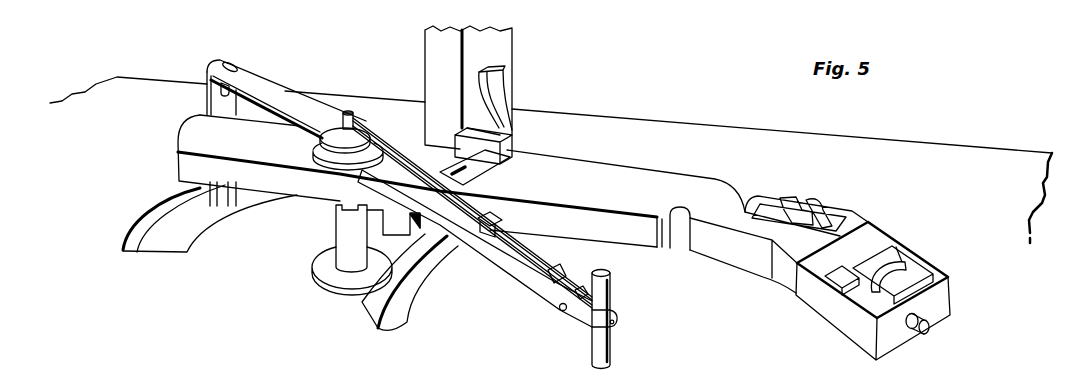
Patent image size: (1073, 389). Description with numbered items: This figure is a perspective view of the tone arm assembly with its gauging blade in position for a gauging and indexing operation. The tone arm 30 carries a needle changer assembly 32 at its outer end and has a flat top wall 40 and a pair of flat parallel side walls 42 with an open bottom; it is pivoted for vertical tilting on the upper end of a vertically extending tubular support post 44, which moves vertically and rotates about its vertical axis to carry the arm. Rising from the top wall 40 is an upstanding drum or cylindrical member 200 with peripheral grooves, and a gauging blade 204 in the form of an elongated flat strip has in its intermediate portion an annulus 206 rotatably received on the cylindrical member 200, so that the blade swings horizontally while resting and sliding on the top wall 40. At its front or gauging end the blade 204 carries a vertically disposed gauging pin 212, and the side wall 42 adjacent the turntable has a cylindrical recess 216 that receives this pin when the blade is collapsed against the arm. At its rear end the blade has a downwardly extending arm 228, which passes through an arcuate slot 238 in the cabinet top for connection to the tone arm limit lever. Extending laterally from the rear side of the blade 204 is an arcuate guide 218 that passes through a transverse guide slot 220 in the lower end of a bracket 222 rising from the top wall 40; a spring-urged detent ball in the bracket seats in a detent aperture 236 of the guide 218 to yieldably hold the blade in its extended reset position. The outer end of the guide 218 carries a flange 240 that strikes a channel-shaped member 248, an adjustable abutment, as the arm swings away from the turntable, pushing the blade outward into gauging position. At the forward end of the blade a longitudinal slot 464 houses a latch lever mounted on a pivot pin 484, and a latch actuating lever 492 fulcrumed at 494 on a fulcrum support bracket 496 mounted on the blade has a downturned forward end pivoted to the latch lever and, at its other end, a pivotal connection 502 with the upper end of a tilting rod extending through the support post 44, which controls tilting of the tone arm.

The tone arm 30 is at (724, 178).
The needle changer assembly 32 is at (926, 236).
The top wall 40 is at (603, 172).
The side walls 42 is at (607, 225).
The tubular support post 44 is at (347, 225).
The cylindrical member 200 is at (325, 141).
The gauging blade 204 is at (290, 103).
The annulus 206 is at (338, 160).
The gauging pin 212 is at (612, 302).
The cylindrical recess 216 is at (673, 233).
The arcuate guide 218 is at (497, 103).
The guide slot 220 is at (488, 142).
The bracket 222 is at (497, 128).
The gauging blade arm 228 is at (220, 100).
The detent aperture 236 is at (463, 180).
The arcuate slot 238 is at (147, 230).
The flange 240 is at (500, 75).
The channel-shaped member 248 is at (497, 43).
The longitudinal slot 464 is at (553, 298).
The pivot pin 484 is at (562, 312).
The latch actuating lever 492 is at (395, 152).
The fulcrum 494 is at (466, 238).
The fulcrum support bracket 496 is at (497, 228).
The pivotal connection 502 is at (352, 115).